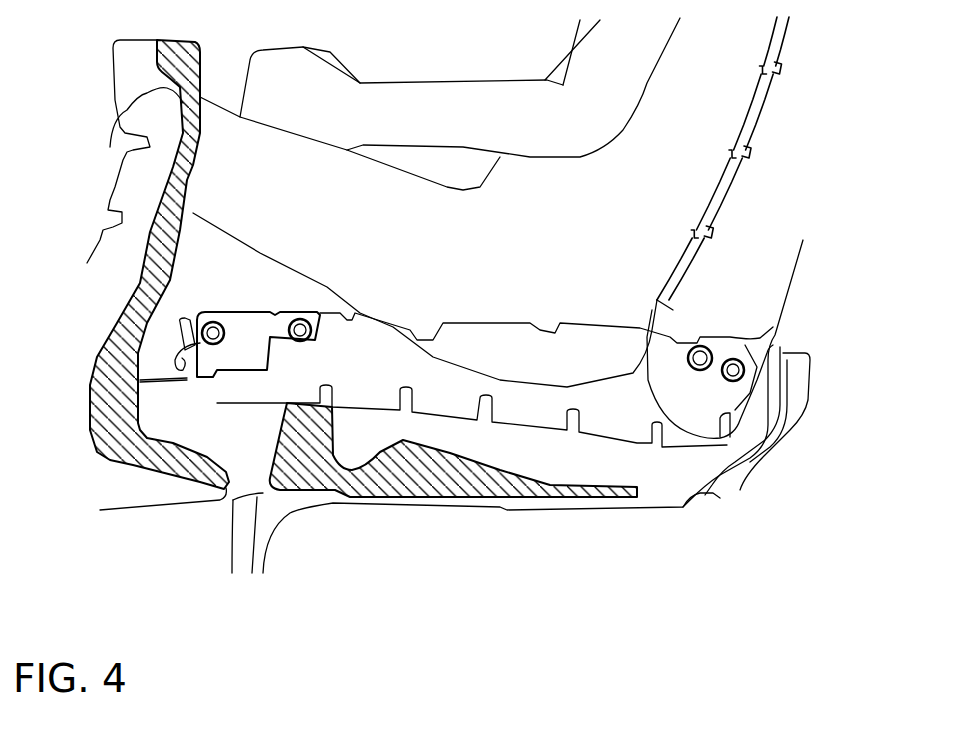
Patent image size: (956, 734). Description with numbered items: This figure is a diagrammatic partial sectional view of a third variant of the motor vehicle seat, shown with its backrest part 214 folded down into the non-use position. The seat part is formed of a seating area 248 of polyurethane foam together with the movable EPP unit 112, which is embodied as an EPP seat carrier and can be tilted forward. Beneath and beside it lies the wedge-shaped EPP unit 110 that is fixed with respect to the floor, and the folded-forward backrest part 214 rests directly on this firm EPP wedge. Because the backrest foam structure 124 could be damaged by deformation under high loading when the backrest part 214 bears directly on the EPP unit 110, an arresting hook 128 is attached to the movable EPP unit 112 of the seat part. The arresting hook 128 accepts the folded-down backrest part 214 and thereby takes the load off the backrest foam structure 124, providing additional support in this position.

The EPP unit fixed with respect to the floor 110 is at (292, 448).
The movable EPP unit 112 is at (157, 243).
The backrest foam structure 124 is at (353, 360).
The arresting hook 128 is at (180, 377).
The backrest part 214 is at (513, 347).
The seating area 248 is at (152, 117).